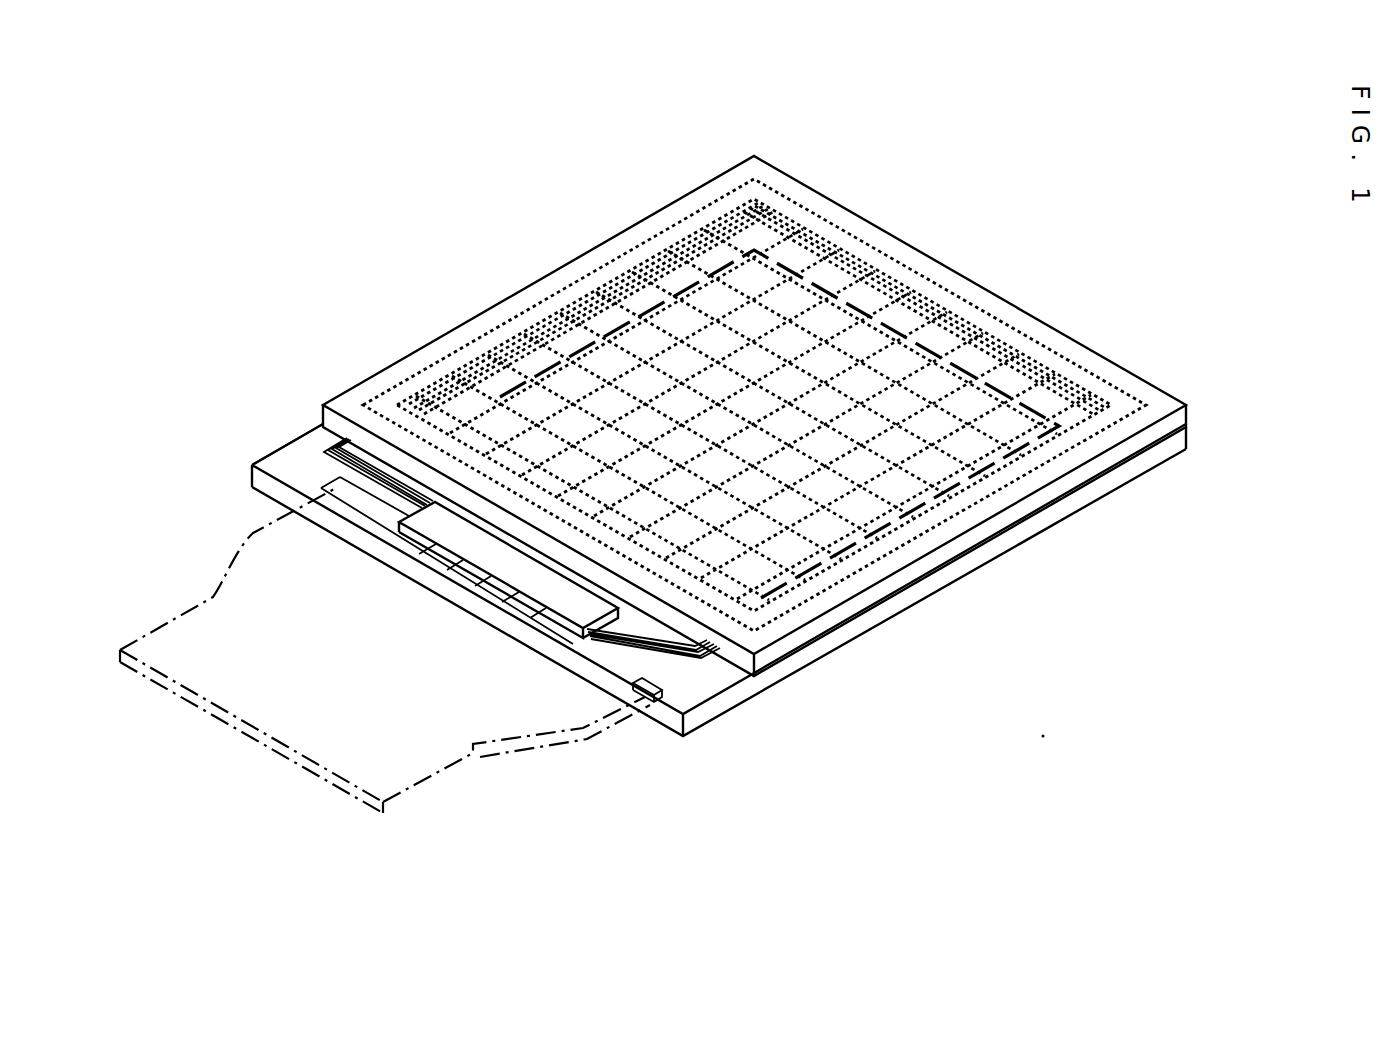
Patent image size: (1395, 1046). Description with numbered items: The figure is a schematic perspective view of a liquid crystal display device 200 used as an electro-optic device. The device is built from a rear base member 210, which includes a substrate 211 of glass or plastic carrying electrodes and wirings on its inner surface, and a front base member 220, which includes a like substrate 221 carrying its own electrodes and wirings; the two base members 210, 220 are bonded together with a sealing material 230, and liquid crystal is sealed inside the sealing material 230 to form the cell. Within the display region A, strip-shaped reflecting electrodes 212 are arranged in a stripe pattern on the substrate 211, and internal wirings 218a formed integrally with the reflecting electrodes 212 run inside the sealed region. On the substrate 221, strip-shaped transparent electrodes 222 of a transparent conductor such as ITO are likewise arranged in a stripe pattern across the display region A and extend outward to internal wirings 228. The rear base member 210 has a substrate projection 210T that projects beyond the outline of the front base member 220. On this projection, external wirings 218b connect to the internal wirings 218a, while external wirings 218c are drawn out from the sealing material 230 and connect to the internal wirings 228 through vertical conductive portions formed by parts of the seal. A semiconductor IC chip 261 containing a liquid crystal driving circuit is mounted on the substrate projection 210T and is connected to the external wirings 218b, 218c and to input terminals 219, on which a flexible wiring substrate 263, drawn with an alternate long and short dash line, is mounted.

The liquid crystal display device 200 is at (1157, 164).
The rear base member 210 is at (1025, 547).
The substrate 211 is at (870, 627).
The substrate projection 210T is at (297, 473).
The front base member 220 is at (1136, 372).
The substrate 221 is at (806, 186).
The transparent electrodes 222 is at (1030, 322).
The sealing material 230 is at (570, 313).
The reflecting electrodes 212 is at (637, 283).
The display region A is at (670, 290).
The internal wirings 228 is at (933, 548).
The internal wirings 218a is at (392, 360).
The semiconductor IC chip 261 is at (430, 520).
The input terminals 219 is at (441, 567).
The external wirings 218b is at (578, 603).
The external wirings 218c is at (688, 672).
The flexible wiring substrate 263 is at (253, 592).